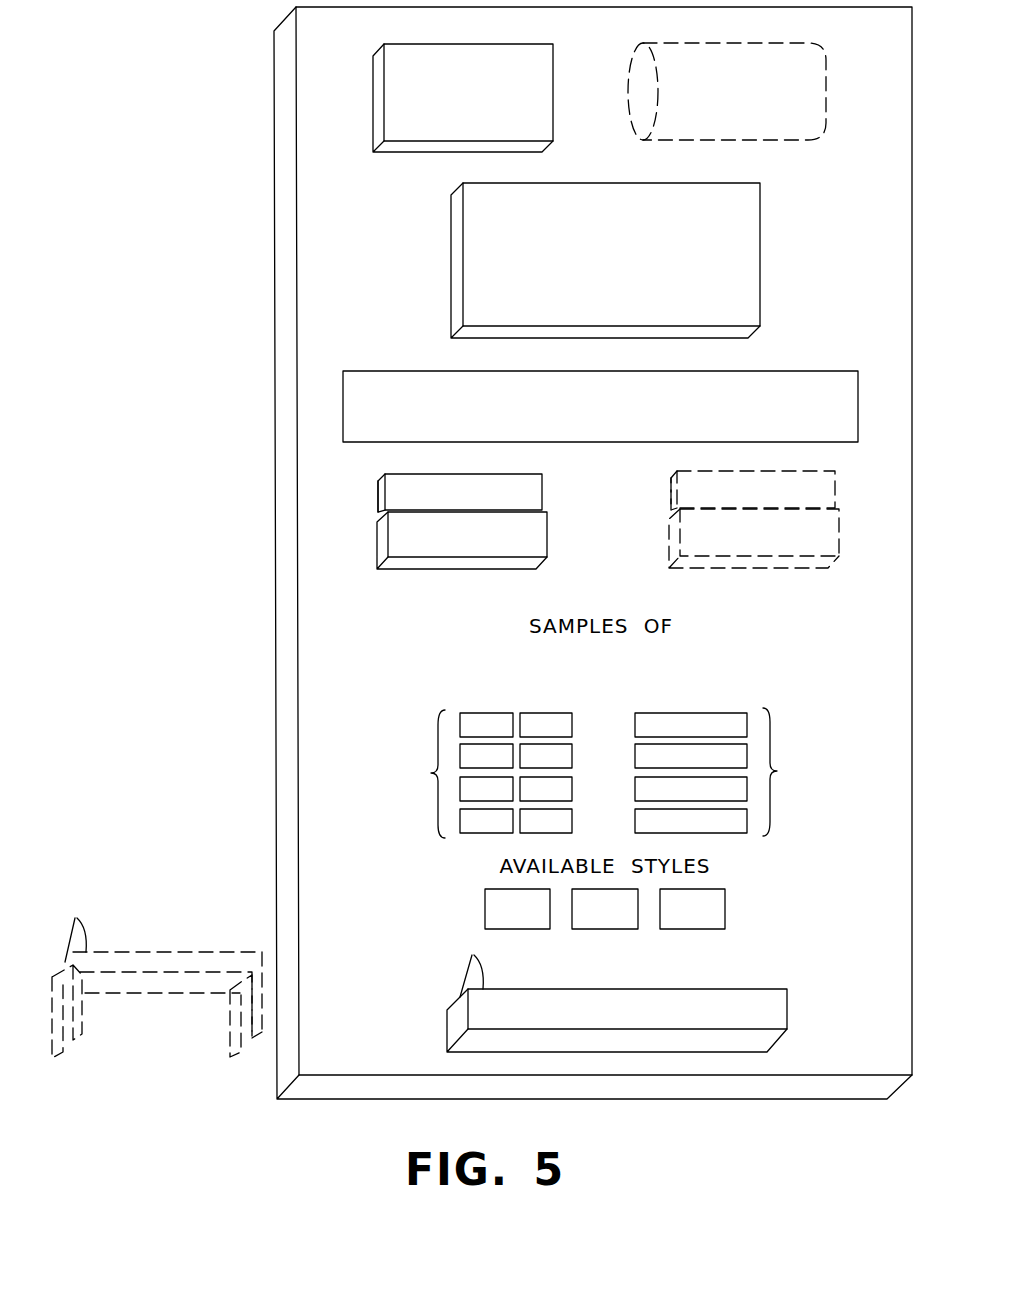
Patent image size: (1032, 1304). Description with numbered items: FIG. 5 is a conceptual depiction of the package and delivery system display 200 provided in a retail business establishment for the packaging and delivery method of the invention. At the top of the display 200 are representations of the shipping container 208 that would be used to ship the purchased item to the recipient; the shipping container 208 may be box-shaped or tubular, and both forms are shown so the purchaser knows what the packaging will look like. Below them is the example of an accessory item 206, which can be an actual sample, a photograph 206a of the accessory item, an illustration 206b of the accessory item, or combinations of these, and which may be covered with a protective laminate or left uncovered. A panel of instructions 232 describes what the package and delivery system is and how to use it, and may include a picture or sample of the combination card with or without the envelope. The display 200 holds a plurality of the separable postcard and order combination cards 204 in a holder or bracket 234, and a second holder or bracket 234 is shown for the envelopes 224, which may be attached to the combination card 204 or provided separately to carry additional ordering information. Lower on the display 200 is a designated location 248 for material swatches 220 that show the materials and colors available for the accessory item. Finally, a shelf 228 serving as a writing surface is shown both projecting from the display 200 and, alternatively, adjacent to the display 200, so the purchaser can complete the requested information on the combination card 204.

The package and delivery system display 200 is at (247, 138).
The shipping container 208 is at (455, 44).
The example of an accessory item 206 is at (616, 260).
The photograph of the accessory item 206a is at (476, 276).
The illustration of the accessory item 206b is at (748, 277).
The instructions 232 is at (860, 402).
The separable postcard and order combination card 204 is at (543, 482).
The envelope 224 is at (836, 478).
The holder or bracket 234 is at (376, 548).
The material swatches 220 is at (765, 692).
The designated location for displaying material swatches 248 is at (412, 826).
The shelf 228 is at (636, 988).